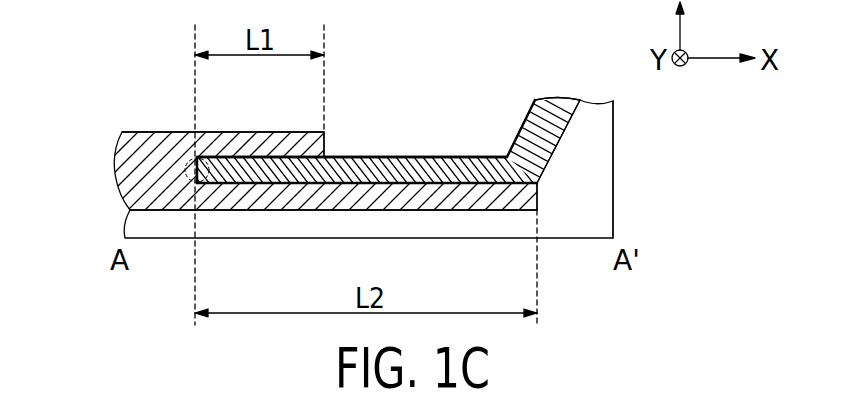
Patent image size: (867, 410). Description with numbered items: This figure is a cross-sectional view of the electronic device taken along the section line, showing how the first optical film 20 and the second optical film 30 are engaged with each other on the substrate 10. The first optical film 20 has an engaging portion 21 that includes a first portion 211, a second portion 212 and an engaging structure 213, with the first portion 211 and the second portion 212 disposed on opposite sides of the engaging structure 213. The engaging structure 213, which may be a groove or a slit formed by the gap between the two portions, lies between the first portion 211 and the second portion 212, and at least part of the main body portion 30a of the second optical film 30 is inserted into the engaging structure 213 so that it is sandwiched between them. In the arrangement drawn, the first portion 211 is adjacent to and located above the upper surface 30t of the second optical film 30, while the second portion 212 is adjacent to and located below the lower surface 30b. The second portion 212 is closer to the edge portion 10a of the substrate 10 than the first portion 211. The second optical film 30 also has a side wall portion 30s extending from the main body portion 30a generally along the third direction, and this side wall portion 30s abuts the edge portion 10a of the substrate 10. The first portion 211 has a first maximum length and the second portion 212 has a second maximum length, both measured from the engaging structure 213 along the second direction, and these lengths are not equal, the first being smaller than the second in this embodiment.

The substrate 10 is at (429, 169).
The edge portion of the substrate 10a is at (598, 172).
The first optical film 20 is at (118, 178).
The engaging portion 21 is at (337, 181).
The first portion 211 is at (257, 137).
The second portion 212 is at (293, 198).
The engaging structure 213 is at (178, 150).
The second optical film 30 is at (390, 162).
The main body portion of the second optical film 30a is at (463, 170).
The upper surface of the second optical film 30t is at (408, 156).
The lower surface of the second optical film 30b is at (433, 184).
The side wall portion of the second optical film 30s is at (558, 99).